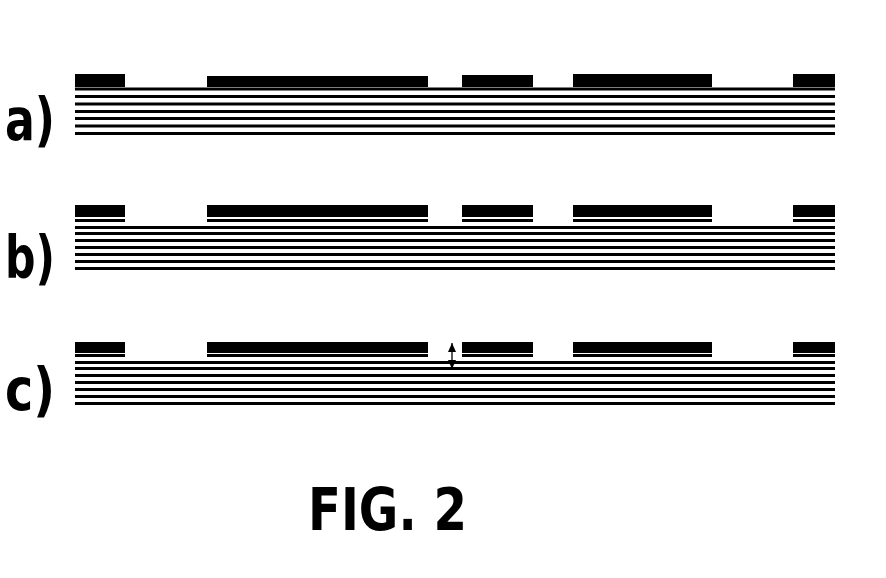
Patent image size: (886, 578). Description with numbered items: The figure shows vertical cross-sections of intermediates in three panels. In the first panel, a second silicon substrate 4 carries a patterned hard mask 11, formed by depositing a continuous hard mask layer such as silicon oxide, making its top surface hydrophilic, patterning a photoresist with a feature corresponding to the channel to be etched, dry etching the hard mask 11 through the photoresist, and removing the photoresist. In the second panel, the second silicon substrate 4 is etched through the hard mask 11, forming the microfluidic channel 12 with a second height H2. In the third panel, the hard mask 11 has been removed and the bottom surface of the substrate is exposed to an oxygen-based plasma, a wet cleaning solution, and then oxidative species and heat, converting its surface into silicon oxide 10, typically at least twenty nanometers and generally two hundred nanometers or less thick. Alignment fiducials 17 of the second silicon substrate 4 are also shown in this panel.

The second silicon substrate 4 is at (813, 136).
The hard mask 11 is at (385, 77).
The microfluidic channel 12 is at (438, 212).
The silicon oxide 10 is at (242, 342).
The alignment fiducials 17 is at (432, 366).
The second height H2 is at (452, 341).